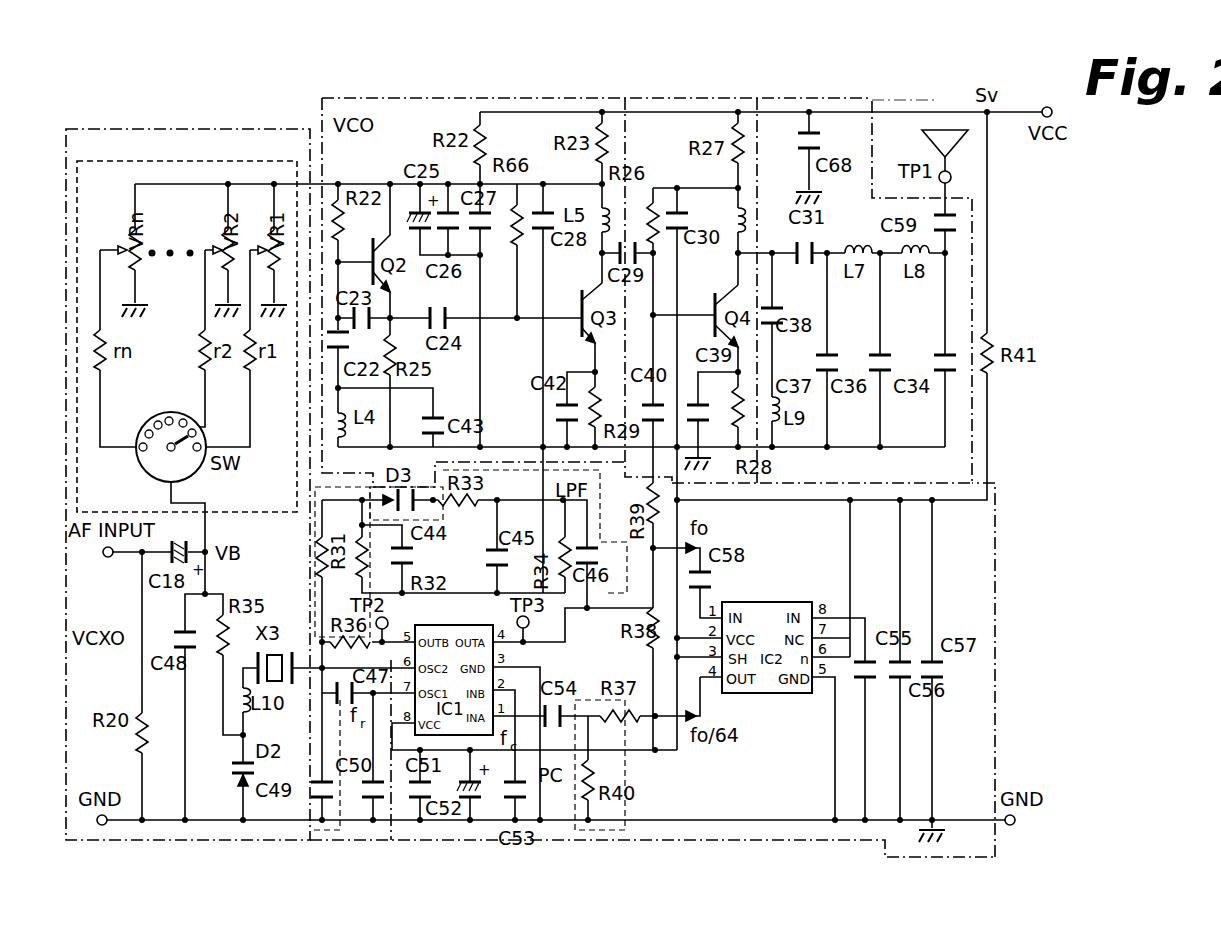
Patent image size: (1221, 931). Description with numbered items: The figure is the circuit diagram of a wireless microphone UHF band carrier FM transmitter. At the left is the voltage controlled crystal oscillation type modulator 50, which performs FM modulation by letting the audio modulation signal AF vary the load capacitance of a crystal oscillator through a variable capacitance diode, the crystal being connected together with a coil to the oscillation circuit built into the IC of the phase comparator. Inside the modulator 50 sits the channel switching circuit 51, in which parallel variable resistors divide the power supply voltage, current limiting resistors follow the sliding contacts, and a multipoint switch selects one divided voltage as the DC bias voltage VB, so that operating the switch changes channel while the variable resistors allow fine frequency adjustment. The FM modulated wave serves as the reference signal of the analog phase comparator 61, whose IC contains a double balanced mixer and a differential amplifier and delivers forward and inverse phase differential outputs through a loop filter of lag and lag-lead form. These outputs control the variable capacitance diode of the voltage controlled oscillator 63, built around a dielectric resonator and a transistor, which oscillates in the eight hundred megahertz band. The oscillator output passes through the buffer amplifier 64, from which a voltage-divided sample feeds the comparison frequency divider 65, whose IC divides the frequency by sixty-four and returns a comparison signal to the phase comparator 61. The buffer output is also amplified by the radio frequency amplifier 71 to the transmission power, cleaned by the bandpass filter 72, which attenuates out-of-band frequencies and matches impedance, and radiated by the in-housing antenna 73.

The voltage controlled crystal oscillation type modulator 50 is at (222, 131).
The channel switching circuit 51 is at (128, 160).
The analog phase comparator 61 is at (453, 834).
The voltage controlled oscillator 63 is at (392, 102).
The buffer amplifier 64 is at (583, 102).
The comparison frequency divider 65 is at (993, 550).
The radio frequency amplifier 71 is at (700, 102).
The bandpass filter 72 is at (866, 100).
The in-housing antenna 73 is at (927, 137).